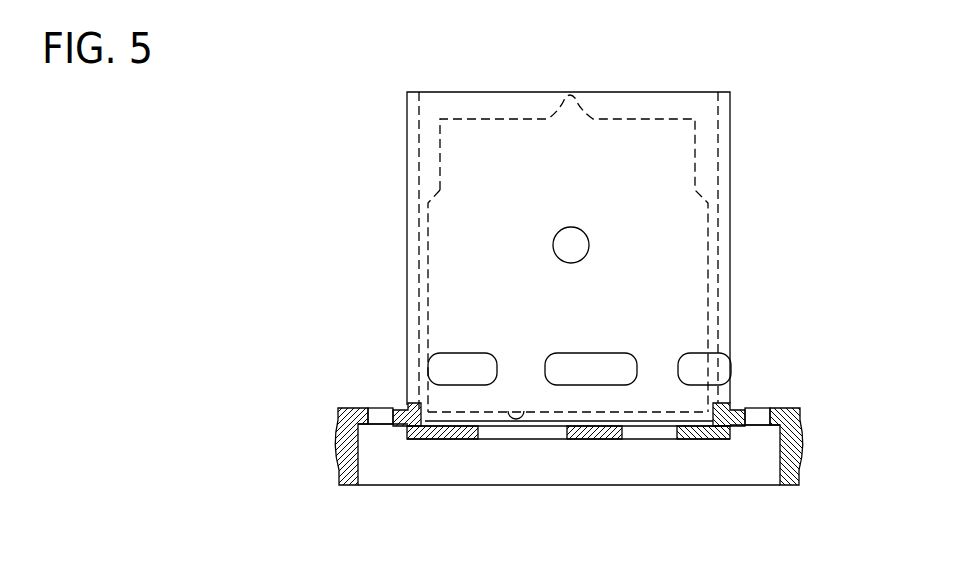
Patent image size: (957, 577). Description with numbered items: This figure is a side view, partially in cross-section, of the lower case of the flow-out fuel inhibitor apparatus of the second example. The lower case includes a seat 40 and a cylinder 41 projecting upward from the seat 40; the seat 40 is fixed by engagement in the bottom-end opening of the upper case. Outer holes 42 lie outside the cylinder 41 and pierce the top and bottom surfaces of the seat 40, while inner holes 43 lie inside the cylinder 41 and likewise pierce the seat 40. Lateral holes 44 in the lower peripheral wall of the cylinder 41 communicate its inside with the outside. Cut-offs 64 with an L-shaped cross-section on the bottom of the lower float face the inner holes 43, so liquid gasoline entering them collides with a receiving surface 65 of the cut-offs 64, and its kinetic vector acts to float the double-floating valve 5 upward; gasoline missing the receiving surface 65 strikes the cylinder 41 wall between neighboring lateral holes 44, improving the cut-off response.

The double-floating valve 5 is at (632, 112).
The seat 40 is at (802, 412).
The cylinder 41 is at (728, 177).
The outer holes 42 is at (377, 413).
The inner holes 43 is at (520, 428).
The lateral holes 44 is at (432, 367).
The cut-offs 64 is at (670, 414).
The receiving surface 65 is at (526, 410).